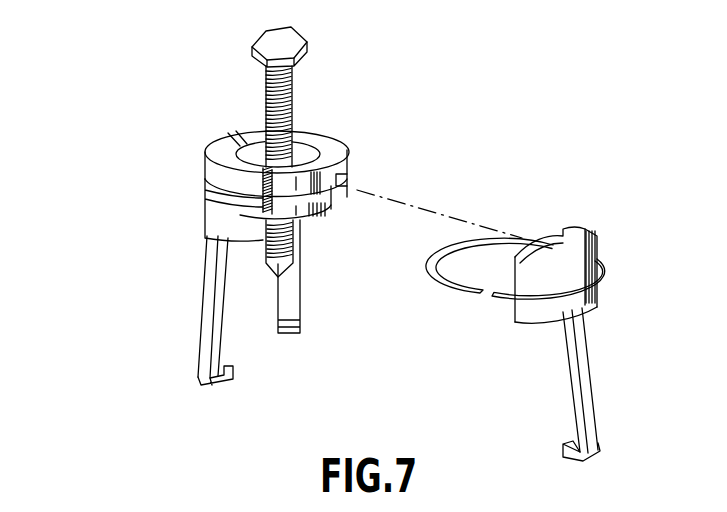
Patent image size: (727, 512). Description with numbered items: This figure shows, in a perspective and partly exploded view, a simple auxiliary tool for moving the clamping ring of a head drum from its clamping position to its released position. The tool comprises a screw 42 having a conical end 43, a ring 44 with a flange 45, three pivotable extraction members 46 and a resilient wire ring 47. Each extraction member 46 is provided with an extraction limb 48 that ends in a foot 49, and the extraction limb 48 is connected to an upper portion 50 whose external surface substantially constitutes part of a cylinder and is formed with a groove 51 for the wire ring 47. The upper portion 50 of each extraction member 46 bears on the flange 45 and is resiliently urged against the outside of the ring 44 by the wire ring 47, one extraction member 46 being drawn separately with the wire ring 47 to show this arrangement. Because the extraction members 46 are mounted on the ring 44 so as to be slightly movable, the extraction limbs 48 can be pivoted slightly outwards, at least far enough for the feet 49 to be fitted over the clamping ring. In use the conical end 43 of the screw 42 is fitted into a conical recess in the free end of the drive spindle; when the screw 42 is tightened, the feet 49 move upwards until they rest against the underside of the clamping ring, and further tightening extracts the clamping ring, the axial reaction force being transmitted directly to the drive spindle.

The screw 42 is at (291, 83).
The conical end 43 is at (276, 273).
The ring 44 is at (322, 167).
The flange 45 is at (313, 218).
The extraction member 46 is at (378, 205).
The resilient wire ring 47 is at (528, 242).
The extraction limb 48 is at (212, 293).
The foot 49 is at (292, 333).
The upper portion 50 is at (587, 242).
The groove 51 is at (349, 177).